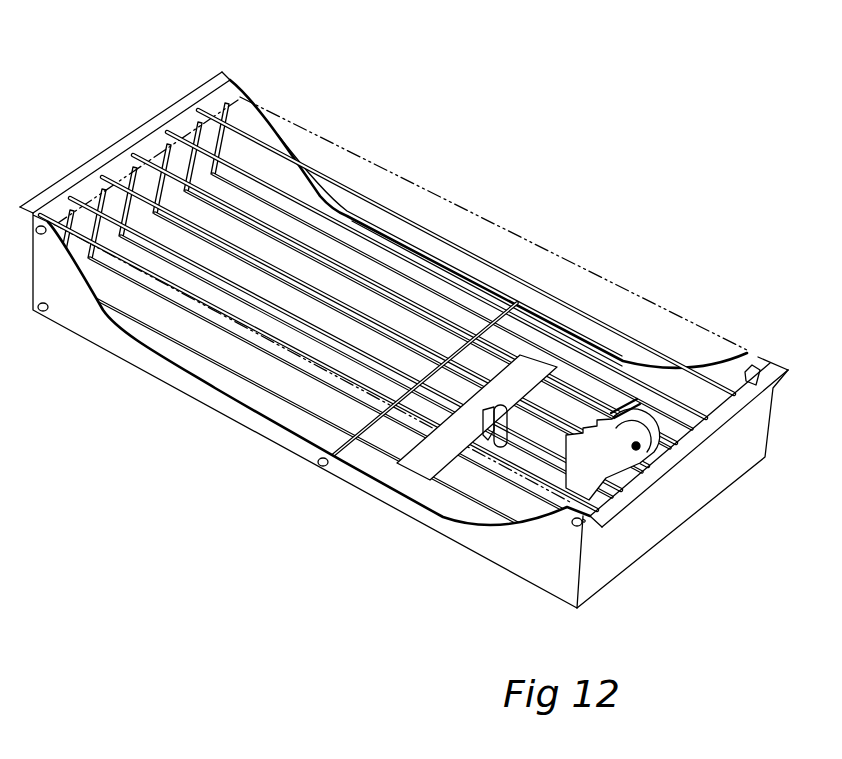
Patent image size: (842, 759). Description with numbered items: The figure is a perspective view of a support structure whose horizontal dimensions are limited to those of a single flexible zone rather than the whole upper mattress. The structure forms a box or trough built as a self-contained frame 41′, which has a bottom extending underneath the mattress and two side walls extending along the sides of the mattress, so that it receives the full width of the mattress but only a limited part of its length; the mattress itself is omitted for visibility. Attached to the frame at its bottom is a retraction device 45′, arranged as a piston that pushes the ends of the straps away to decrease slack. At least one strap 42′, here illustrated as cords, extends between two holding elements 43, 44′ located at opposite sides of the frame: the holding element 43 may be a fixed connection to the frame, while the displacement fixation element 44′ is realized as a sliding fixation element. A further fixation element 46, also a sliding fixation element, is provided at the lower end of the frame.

The self-contained frame 41′ is at (462, 535).
The strap 42′ is at (633, 334).
The holding element 43 is at (752, 377).
The displacement fixation element 44′ is at (222, 98).
The retraction device 45′ is at (663, 418).
The further fixation element 46 is at (215, 176).